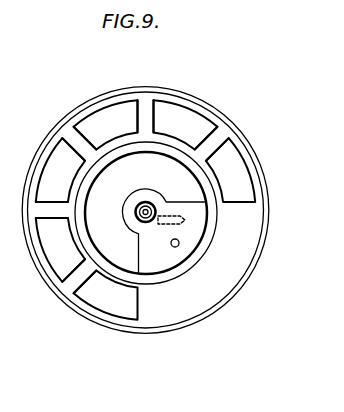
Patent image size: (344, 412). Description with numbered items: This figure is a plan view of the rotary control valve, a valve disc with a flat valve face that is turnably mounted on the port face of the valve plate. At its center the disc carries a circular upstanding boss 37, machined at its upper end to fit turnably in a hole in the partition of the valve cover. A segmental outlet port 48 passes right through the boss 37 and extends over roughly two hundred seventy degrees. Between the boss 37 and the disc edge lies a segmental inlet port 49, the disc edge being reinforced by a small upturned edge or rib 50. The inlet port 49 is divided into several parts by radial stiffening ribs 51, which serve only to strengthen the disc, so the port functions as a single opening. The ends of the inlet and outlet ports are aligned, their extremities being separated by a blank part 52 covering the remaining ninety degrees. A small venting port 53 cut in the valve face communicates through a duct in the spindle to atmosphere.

The boss 37 is at (208, 243).
The segmental outlet port 48 is at (149, 231).
The segmental inlet port 49 is at (127, 115).
The upturned edge or rib 50 is at (249, 269).
The radial stiffening ribs 51 is at (72, 138).
The blank part 52 is at (163, 263).
The venting port 53 is at (176, 215).